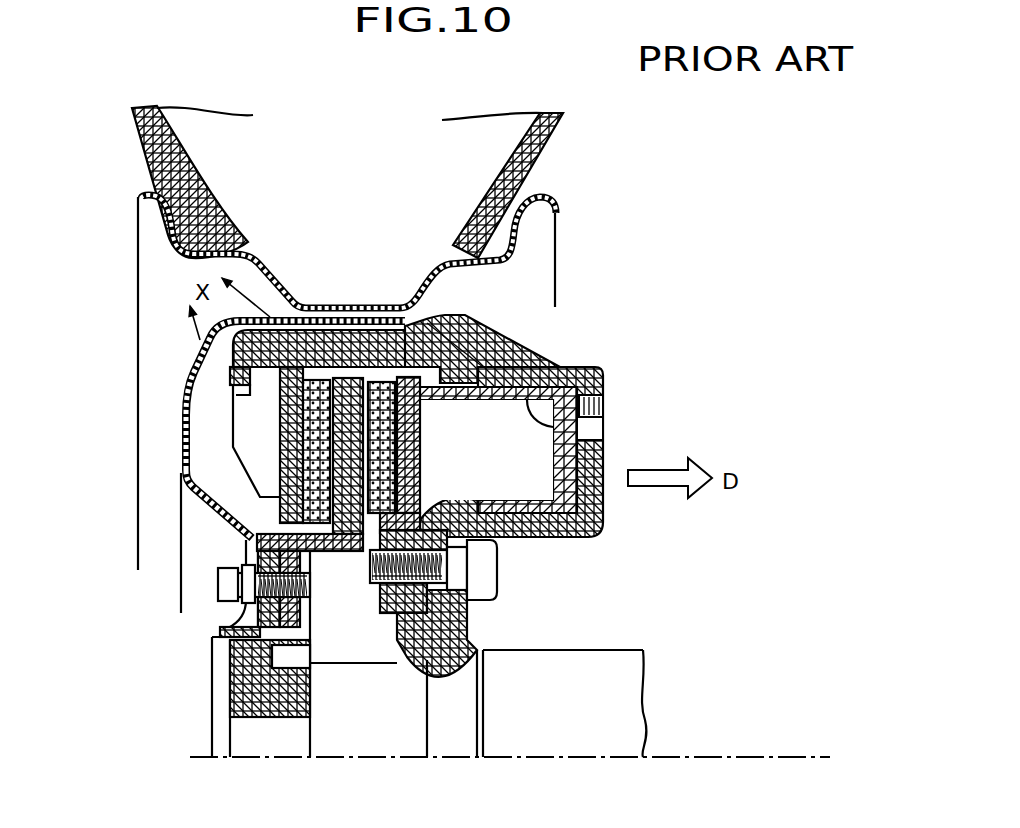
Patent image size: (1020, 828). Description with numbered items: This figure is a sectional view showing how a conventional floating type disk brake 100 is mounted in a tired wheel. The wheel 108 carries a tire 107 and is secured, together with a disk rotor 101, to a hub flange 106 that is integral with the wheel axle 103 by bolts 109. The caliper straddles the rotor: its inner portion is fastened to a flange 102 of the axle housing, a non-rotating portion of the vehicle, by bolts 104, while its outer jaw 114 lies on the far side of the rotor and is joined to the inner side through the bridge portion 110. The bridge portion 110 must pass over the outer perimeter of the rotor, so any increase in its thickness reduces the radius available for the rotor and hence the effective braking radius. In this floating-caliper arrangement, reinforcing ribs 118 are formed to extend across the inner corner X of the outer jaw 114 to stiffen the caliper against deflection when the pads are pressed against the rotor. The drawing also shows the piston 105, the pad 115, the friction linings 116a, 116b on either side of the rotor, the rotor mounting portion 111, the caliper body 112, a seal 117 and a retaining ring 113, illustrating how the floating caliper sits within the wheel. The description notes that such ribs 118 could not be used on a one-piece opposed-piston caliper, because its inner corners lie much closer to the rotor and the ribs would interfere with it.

The wheel motor unit 100 is at (419, 365).
The rotor casing 101 is at (564, 369).
The flange of an axle housing 102 is at (450, 627).
The axle shaft 103 is at (395, 617).
The bolts 104 is at (487, 570).
The stator core 105 is at (352, 418).
The hub flange 106 is at (232, 646).
The tire 107 is at (560, 130).
The wheel 108 is at (180, 435).
The bolts 109 is at (216, 584).
The bridge portion 110 is at (343, 343).
The rotor yoke 111 is at (603, 522).
The rotor cover 112 is at (517, 333).
The bearing ring 113 is at (603, 432).
The outer jaw 114 is at (247, 370).
The bracket 115 is at (250, 386).
The stator coil 116a is at (383, 378).
The stator coil 116b is at (300, 468).
The seal 117 is at (603, 392).
The reinforcing ribs 118 is at (288, 378).